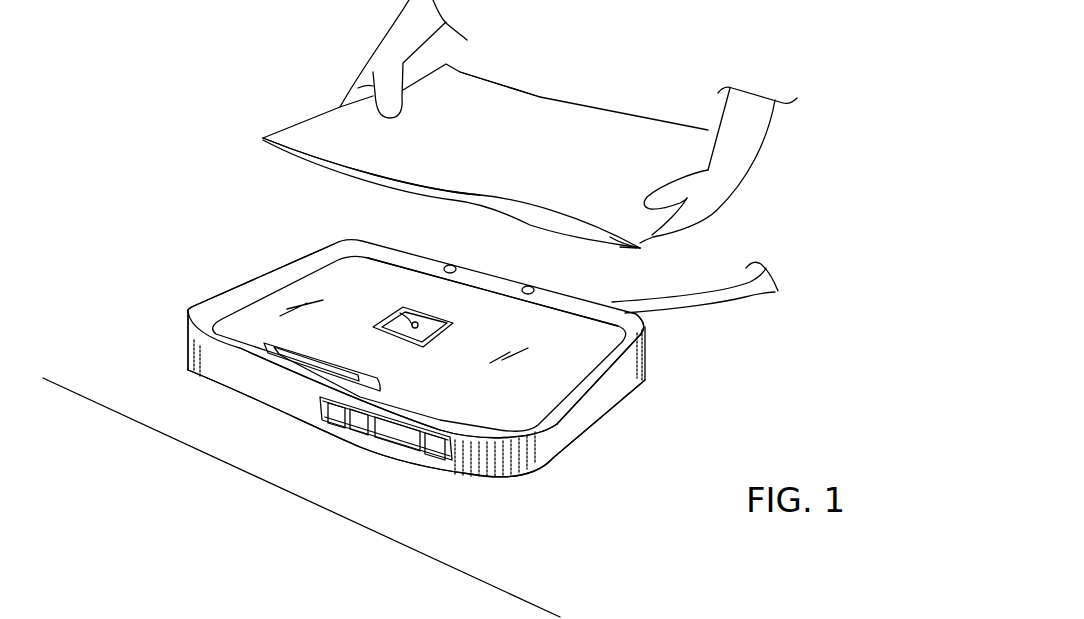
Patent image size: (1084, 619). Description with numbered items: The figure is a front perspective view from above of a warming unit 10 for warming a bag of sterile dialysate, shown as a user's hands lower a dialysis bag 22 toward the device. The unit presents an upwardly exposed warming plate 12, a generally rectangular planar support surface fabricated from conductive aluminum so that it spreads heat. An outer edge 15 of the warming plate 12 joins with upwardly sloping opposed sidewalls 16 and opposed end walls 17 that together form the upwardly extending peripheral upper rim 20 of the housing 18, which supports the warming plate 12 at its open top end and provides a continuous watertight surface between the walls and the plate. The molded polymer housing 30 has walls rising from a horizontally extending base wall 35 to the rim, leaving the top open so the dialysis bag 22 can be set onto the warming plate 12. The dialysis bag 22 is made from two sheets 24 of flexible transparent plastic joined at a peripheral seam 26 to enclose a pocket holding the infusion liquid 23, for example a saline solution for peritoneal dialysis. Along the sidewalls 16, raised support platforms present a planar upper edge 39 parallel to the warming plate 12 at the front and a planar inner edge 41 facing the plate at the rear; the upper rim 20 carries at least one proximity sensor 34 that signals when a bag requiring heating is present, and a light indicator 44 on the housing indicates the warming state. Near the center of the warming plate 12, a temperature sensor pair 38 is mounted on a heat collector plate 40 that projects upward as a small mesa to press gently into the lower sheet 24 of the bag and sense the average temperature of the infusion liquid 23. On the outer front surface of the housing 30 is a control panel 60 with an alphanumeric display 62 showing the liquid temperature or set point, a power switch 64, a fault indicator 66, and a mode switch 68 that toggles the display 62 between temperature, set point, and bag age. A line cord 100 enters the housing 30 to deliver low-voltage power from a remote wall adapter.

The warming unit 10 is at (183, 200).
The warming plate 12 is at (318, 292).
The outer edge 15 is at (245, 312).
The opposed sidewalls 16 is at (196, 374).
The opposed end walls 17 is at (196, 303).
The housing 18 is at (577, 472).
The upper rim 20 is at (542, 421).
The dialysis bag 22 is at (642, 78).
The infusion liquid 23 is at (513, 103).
The sheets 24 is at (313, 173).
The peripheral seam 26 is at (645, 249).
The housing 30 is at (630, 412).
The proximity sensor 34 is at (453, 263).
The base wall 35 is at (413, 480).
The temperature sensor pair 38 is at (413, 322).
The upper edge 39 is at (310, 383).
The heat collector plate 40 is at (405, 317).
The inner edge 41 is at (507, 280).
The light indicator 44 is at (233, 350).
The control panel 60 is at (453, 478).
The alphanumeric display 62 is at (382, 431).
The power switch 64 is at (430, 452).
The fault indicator 66 is at (333, 428).
The mode switch 68 is at (330, 420).
The line cord 100 is at (738, 296).